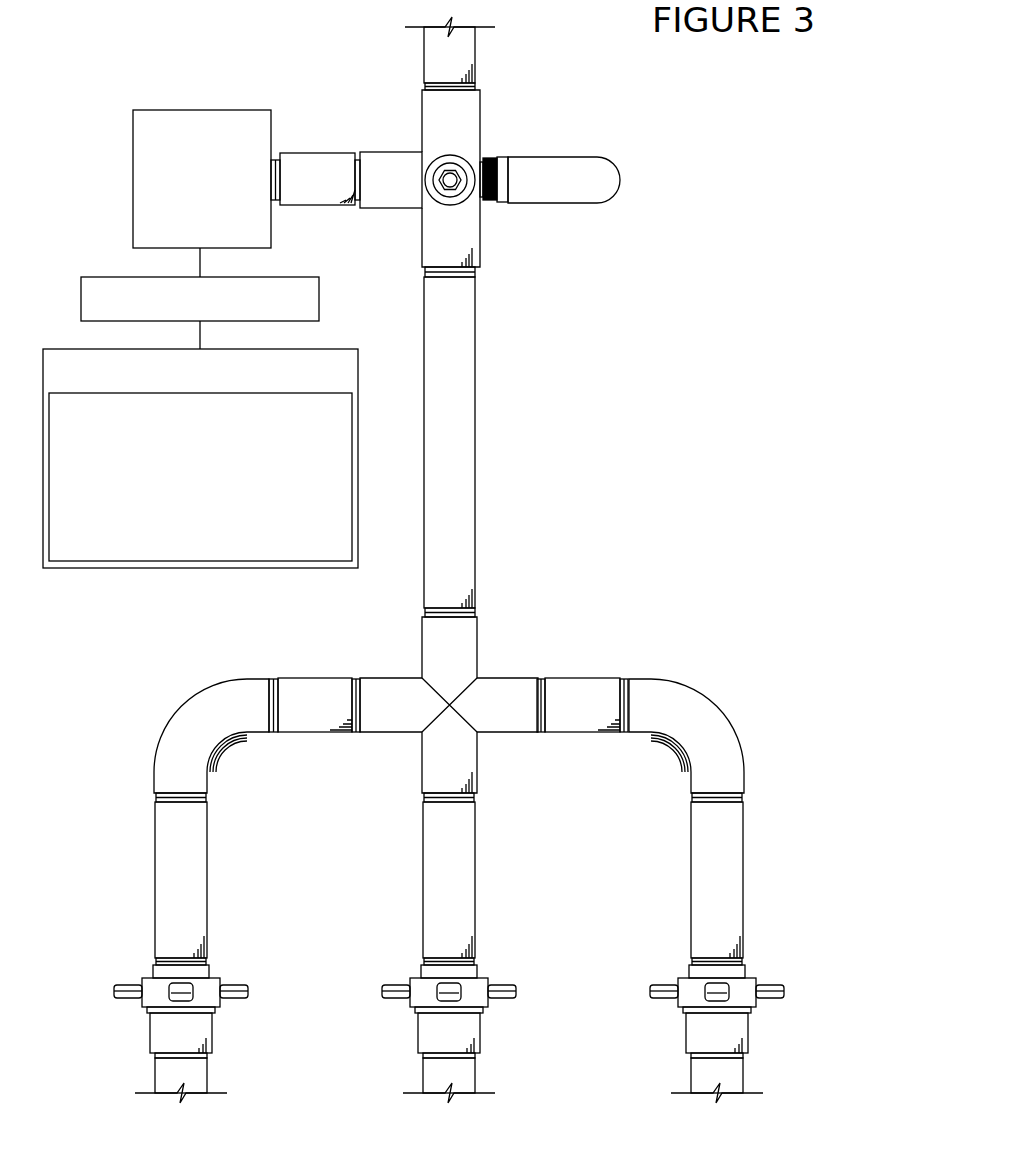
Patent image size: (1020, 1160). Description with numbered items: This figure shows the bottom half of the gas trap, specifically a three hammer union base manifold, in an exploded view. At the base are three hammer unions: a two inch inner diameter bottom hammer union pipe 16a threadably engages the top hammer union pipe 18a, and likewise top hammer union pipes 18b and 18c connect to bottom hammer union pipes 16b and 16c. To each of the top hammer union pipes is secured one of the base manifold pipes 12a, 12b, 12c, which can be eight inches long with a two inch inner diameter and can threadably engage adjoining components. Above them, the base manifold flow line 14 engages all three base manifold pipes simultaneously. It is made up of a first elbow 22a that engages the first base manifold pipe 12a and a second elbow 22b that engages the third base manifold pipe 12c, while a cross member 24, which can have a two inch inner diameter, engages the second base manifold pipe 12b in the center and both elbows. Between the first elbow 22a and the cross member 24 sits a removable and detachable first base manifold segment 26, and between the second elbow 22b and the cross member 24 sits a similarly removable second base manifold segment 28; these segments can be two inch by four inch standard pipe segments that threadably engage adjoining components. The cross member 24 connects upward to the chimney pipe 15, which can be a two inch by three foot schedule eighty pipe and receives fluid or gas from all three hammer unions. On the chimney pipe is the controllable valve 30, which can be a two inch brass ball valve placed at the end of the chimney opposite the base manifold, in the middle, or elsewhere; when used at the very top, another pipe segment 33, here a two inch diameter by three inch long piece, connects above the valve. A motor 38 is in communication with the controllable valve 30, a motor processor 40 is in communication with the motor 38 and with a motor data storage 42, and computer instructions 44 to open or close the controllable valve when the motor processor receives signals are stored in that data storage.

The first base manifold pipe 12a is at (163, 880).
The second base manifold pipe 12b is at (431, 880).
The third base manifold pipe 12c is at (699, 880).
The base manifold flow line 14 is at (140, 675).
The chimney pipe 15 is at (462, 425).
The bottom hammer union pipe 16a is at (158, 1035).
The bottom hammer union pipe 16b is at (426, 1035).
The bottom hammer union pipe 16c is at (694, 1035).
The top hammer union pipe 18a is at (220, 1002).
The top hammer union pipe 18b is at (488, 1002).
The top hammer union pipe 18c is at (756, 1002).
The first elbow 22a is at (168, 725).
The second elbow 22b is at (722, 723).
The cross member 24 is at (397, 720).
The first base manifold segment 26 is at (320, 690).
The second base manifold segment 28 is at (587, 690).
The controllable valve 30 is at (462, 130).
The segment 33 is at (432, 57).
The motor 38 is at (132, 180).
The motor processor 40 is at (319, 300).
The motor data storage 42 is at (358, 372).
The computer instructions 44 is at (352, 478).